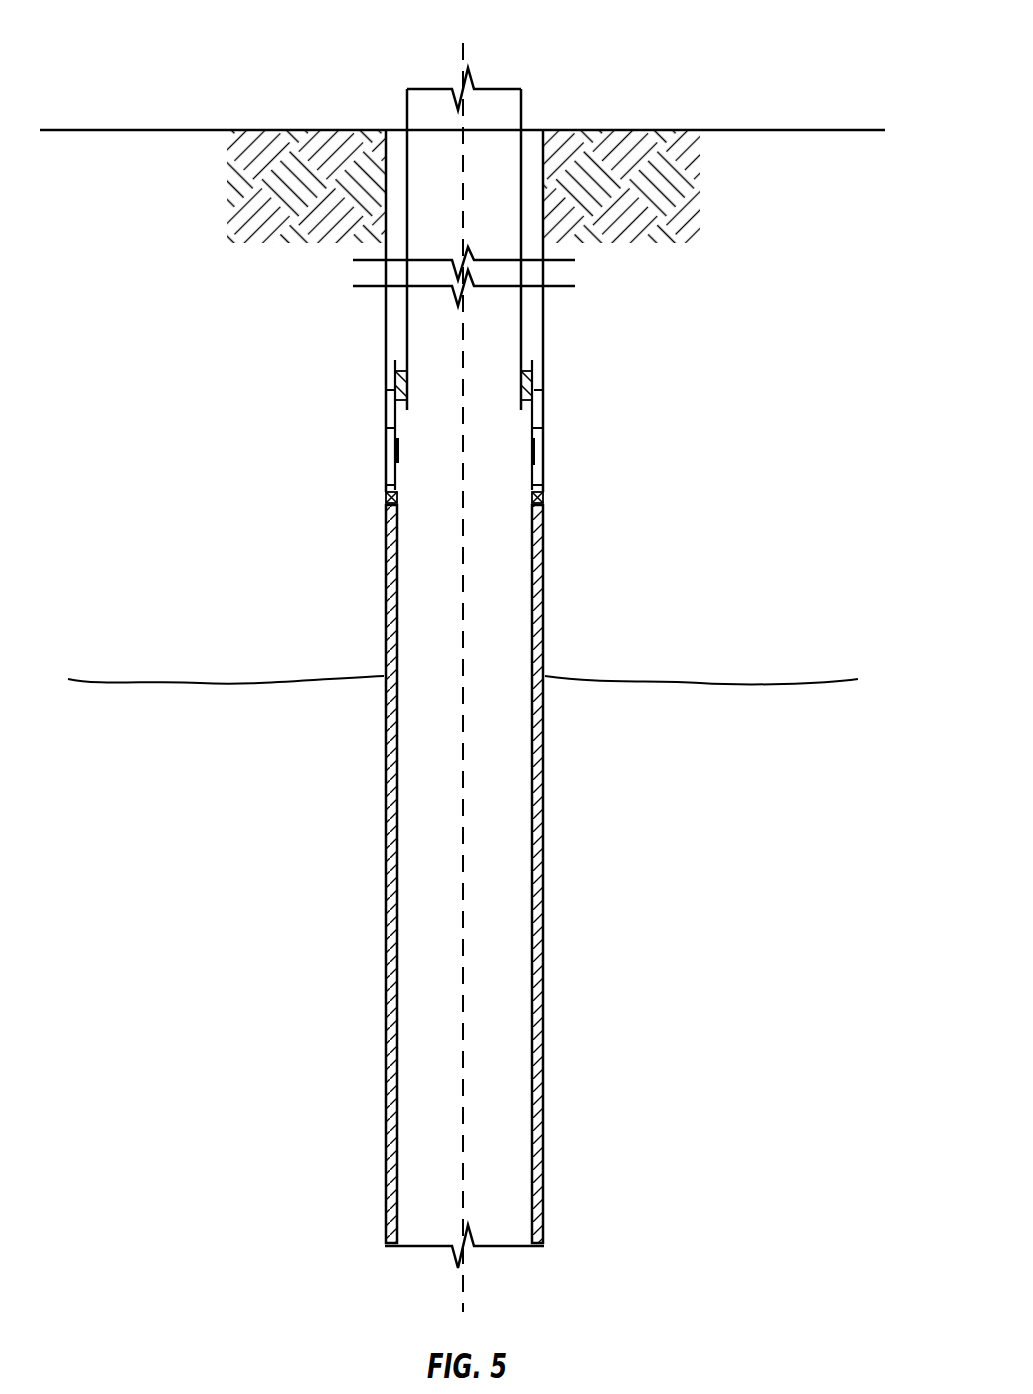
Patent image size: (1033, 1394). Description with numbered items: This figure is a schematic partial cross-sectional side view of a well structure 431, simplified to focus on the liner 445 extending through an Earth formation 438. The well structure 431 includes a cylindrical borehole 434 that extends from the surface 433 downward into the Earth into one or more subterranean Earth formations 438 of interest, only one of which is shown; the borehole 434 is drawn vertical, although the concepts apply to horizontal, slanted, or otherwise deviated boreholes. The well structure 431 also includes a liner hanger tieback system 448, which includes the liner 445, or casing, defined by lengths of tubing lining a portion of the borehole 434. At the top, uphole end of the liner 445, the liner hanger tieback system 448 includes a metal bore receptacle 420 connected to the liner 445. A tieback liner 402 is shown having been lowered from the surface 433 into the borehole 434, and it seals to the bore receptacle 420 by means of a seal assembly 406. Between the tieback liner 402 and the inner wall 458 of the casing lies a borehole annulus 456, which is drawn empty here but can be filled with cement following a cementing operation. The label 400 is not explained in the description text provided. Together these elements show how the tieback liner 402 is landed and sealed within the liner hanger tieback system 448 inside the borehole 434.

The downhole tool assembly 400 is at (600, 377).
The tieback liner 402 is at (405, 335).
The seal assembly 406 is at (398, 385).
The bore receptacle 420 is at (390, 430).
The well structure 431 is at (790, 44).
The surface 433 is at (818, 130).
The borehole 434 is at (555, 868).
The Earth formation 438 is at (755, 793).
The liner 445 is at (388, 483).
The liner hanger tieback system 448 is at (545, 445).
The borehole annulus 456 is at (528, 347).
The inner wall 458 is at (536, 553).